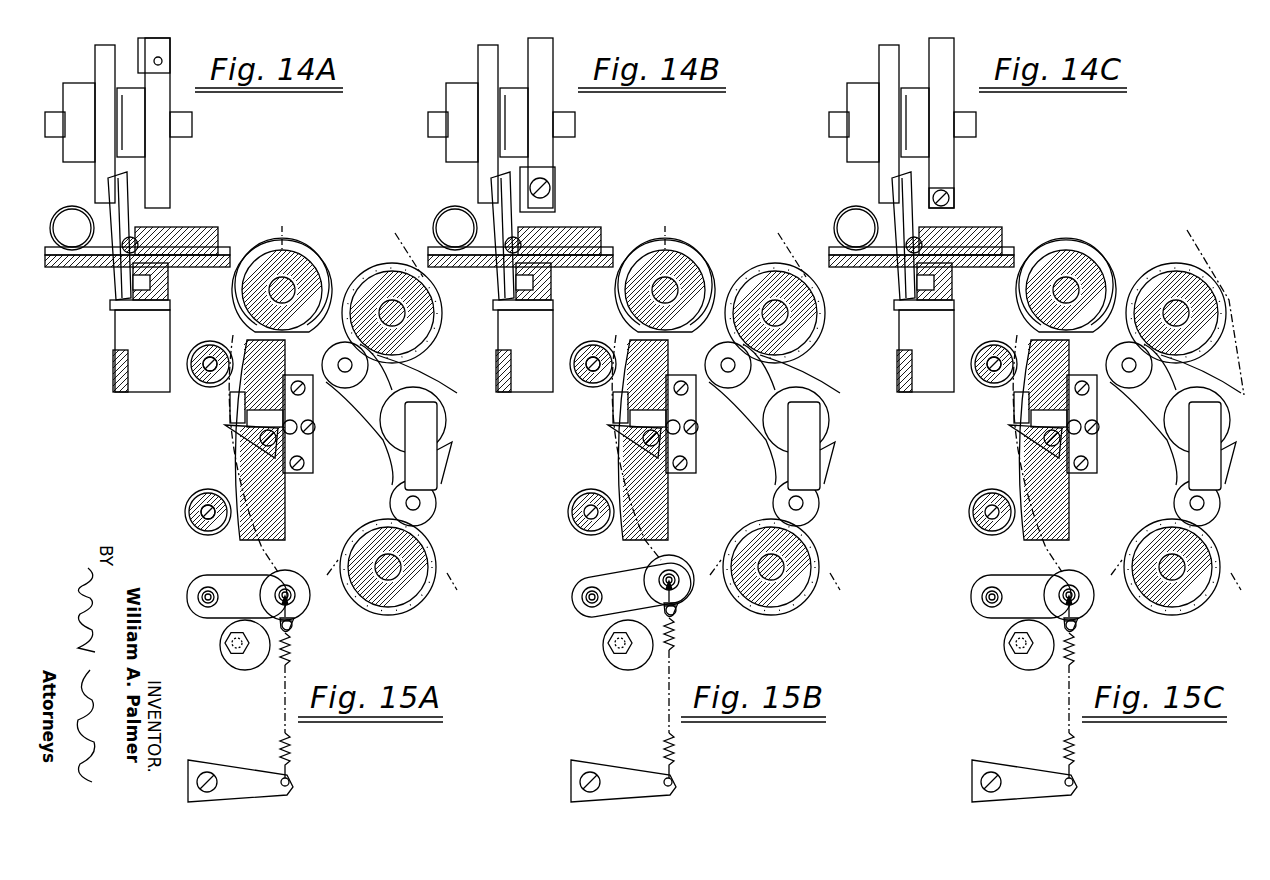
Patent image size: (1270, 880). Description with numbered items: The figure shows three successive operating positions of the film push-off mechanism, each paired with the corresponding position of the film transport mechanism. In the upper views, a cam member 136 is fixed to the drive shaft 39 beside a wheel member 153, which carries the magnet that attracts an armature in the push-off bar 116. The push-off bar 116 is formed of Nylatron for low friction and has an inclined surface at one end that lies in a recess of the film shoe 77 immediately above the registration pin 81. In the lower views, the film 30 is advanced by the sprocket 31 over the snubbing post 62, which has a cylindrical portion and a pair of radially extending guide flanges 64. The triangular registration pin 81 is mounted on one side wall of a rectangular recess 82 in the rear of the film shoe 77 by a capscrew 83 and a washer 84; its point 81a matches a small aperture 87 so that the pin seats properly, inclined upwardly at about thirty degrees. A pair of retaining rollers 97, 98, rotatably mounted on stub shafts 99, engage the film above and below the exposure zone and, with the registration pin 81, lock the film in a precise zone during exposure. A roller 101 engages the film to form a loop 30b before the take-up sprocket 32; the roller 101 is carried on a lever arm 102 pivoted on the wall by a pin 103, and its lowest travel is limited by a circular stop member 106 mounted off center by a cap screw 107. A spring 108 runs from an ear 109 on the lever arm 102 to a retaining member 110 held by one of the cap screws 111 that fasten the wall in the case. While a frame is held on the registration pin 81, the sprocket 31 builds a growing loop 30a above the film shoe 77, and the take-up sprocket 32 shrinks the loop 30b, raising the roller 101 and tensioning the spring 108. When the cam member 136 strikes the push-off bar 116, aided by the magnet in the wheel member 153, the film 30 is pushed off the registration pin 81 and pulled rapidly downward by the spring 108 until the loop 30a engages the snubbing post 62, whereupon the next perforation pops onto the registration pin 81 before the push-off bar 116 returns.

In FIG. 15A, the film 30 is at (243, 558).
In FIG. 15B, the film 30 is at (622, 453).
In FIG. 14C, the film 30 is at (1193, 312).
In FIG. 15C, the film 30 is at (1023, 453).
In FIG. 14A, the film loop 30a is at (281, 228).
In FIG. 14B, the film loop 30a is at (654, 228).
In FIG. 15A, the film loop 30b is at (295, 622).
In FIG. 15B, the film loop 30b is at (696, 616).
In FIG. 15C, the film loop 30b is at (1099, 615).
In FIG. 14A, the sprocket 31 is at (436, 330).
In FIG. 14B, the sprocket 31 is at (791, 298).
In FIG. 14C, the sprocket 31 is at (1184, 317).
In FIG. 15A, the take-up sprocket 32 is at (415, 592).
In FIG. 15B, the take-up sprocket 32 is at (788, 570).
In FIG. 15C, the take-up sprocket 32 is at (1178, 576).
In FIG. 14A, the drive shaft 39 is at (188, 128).
In FIG. 14B, the drive shaft 39 is at (579, 140).
In FIG. 14C, the drive shaft 39 is at (980, 140).
In FIG. 14A, the snubbing post 62 is at (301, 250).
In FIG. 14B, the snubbing post 62 is at (665, 269).
In FIG. 14C, the snubbing post 62 is at (1066, 269).
In FIG. 14A, the guide flanges 64 is at (322, 266).
In FIG. 15A, the film shoe 77 is at (275, 500).
In FIG. 15B, the film shoe 77 is at (669, 440).
In FIG. 15C, the film shoe 77 is at (1076, 440).
In FIG. 15A, the registration pin 81 is at (305, 436).
In FIG. 15A, the point 81a is at (228, 426).
In FIG. 15B, the point 81a is at (604, 441).
In FIG. 15C, the point 81a is at (1008, 441).
In FIG. 15A, the rectangular recess 82 is at (300, 468).
In FIG. 15B, the rectangular recess 82 is at (697, 473).
In FIG. 15B, the capscrew 83 is at (695, 453).
In FIG. 15C, the capscrew 83 is at (1089, 450).
In FIG. 15B, the washer 84 is at (684, 444).
In FIG. 15A, the aperture 87 is at (242, 441).
In FIG. 15A, the retaining roller 97 is at (210, 372).
In FIG. 15B, the retaining roller 97 is at (574, 393).
In FIG. 15C, the retaining roller 97 is at (978, 393).
In FIG. 15A, the retaining roller 98 is at (200, 528).
In FIG. 15B, the retaining roller 98 is at (571, 524).
In FIG. 15A, the stub shafts 99 is at (206, 343).
In FIG. 15C, the stub shafts 99 is at (966, 512).
In FIG. 15A, the roller 101 is at (295, 580).
In FIG. 15B, the roller 101 is at (683, 562).
In FIG. 15C, the roller 101 is at (1079, 577).
In FIG. 15A, the lever arm 102 is at (222, 613).
In FIG. 15B, the lever arm 102 is at (617, 606).
In FIG. 15C, the lever arm 102 is at (993, 613).
In FIG. 15A, the pin 103 is at (205, 605).
In FIG. 15A, the circular stop member 106 is at (250, 663).
In FIG. 15B, the circular stop member 106 is at (628, 664).
In FIG. 15C, the circular stop member 106 is at (1019, 665).
In FIG. 15A, the cap screw 107 is at (237, 652).
In FIG. 15A, the spring 108 is at (292, 648).
In FIG. 15B, the spring 108 is at (698, 698).
In FIG. 15C, the spring 108 is at (1101, 705).
In FIG. 15A, the ear 109 is at (294, 627).
In FIG. 15B, the ear 109 is at (696, 622).
In FIG. 15C, the ear 109 is at (1105, 629).
In FIG. 15A, the retaining member 110 is at (265, 774).
In FIG. 15A, the cap screw 111 is at (205, 772).
In FIG. 14A, the push-off bar 116 is at (115, 275).
In FIG. 14B, the push-off bar 116 is at (477, 237).
In FIG. 14C, the push-off bar 116 is at (875, 237).
In FIG. 14A, the cam member 136 is at (101, 165).
In FIG. 14B, the cam member 136 is at (453, 124).
In FIG. 14C, the cam member 136 is at (849, 124).
In FIG. 14A, the wheel member 153 is at (163, 193).
In FIG. 14B, the wheel member 153 is at (568, 125).
In FIG. 14C, the wheel member 153 is at (977, 123).